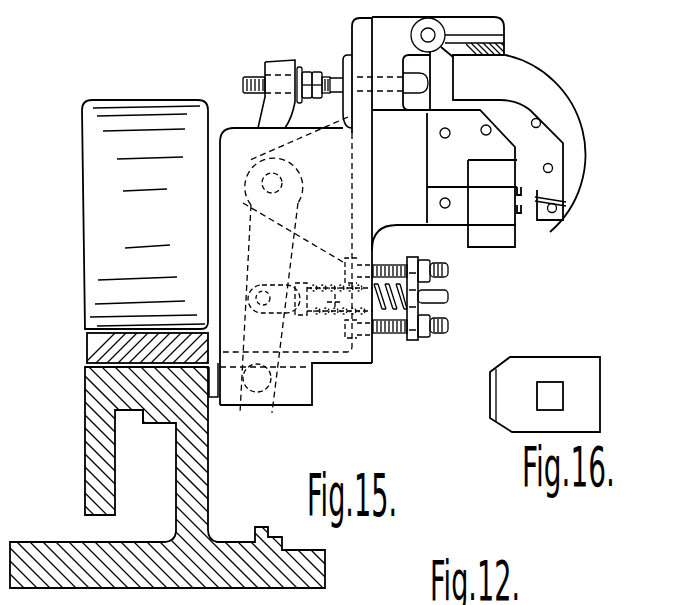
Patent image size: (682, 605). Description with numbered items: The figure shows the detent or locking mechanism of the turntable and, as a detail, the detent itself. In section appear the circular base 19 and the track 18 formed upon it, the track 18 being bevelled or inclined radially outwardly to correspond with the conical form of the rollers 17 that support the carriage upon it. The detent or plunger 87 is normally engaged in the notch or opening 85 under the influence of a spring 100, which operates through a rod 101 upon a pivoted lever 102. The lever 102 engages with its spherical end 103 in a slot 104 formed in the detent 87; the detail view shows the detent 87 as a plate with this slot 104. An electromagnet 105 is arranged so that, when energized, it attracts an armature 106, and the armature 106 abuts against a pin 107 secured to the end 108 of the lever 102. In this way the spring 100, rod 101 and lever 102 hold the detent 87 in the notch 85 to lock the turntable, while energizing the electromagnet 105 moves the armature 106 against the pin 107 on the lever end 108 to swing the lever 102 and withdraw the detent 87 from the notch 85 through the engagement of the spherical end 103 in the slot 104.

In FIG. 15, the conical rollers 17 is at (128, 115).
In FIG. 15, the track 18 is at (90, 352).
In FIG. 15, the circular base 19 is at (95, 396).
In FIG. 15, the notch or opening 85 is at (192, 399).
In FIG. 15, the detent or plunger 87 is at (213, 398).
In FIG. 16, the detent or plunger 87 is at (592, 413).
In FIG. 15, the spring 100 is at (383, 336).
In FIG. 15, the rod 101 is at (337, 305).
In FIG. 15, the pivoted lever 102 is at (287, 271).
In FIG. 15, the spherical end 103 is at (280, 406).
In FIG. 15, the slot 104 is at (255, 392).
In FIG. 16, the slot 104 is at (548, 388).
In FIG. 15, the electromagnet 105 is at (511, 236).
In FIG. 15, the armature 106 is at (557, 182).
In FIG. 15, the pin 107 is at (418, 82).
In FIG. 15, the end of the lever 108 is at (278, 67).